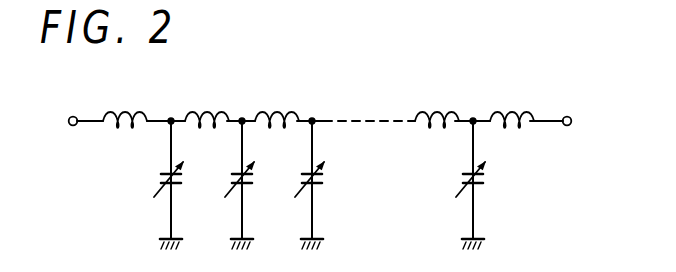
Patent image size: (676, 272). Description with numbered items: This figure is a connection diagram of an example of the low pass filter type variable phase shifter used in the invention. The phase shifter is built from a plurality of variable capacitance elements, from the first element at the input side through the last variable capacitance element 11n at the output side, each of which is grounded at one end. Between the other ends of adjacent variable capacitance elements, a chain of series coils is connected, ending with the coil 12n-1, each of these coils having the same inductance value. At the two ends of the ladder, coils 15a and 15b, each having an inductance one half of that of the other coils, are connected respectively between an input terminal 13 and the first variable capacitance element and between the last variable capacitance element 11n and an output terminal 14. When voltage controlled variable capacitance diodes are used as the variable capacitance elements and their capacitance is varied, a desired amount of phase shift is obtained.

The input terminal 13 is at (73, 126).
The output terminal 14 is at (567, 126).
The coil 15a is at (128, 110).
The coil 15b is at (512, 110).
The coil 12n-1 is at (435, 110).
The variable capacitance element 11n is at (457, 197).